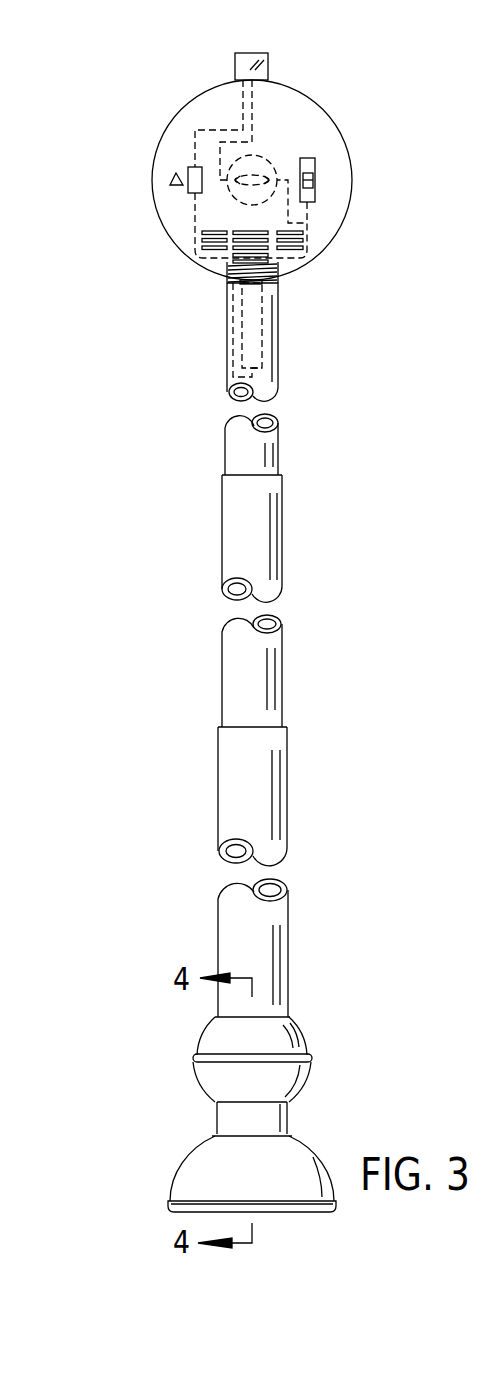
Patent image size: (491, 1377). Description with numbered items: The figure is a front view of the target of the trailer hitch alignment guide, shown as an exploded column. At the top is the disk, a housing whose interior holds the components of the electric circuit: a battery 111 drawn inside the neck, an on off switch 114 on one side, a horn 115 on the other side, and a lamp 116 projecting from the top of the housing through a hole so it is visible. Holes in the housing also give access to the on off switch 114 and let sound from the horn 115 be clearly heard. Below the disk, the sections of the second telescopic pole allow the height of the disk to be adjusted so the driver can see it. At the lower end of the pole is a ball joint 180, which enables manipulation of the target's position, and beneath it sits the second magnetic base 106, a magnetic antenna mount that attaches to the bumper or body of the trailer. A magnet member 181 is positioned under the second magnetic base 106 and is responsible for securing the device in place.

The lamp 116 is at (268, 57).
The horn 115 is at (188, 168).
The on off switch 114 is at (312, 158).
The battery 111 is at (252, 324).
The ball joint 180 is at (187, 1013).
The second magnetic base 106 is at (317, 1157).
The magnet member 181 is at (298, 1210).